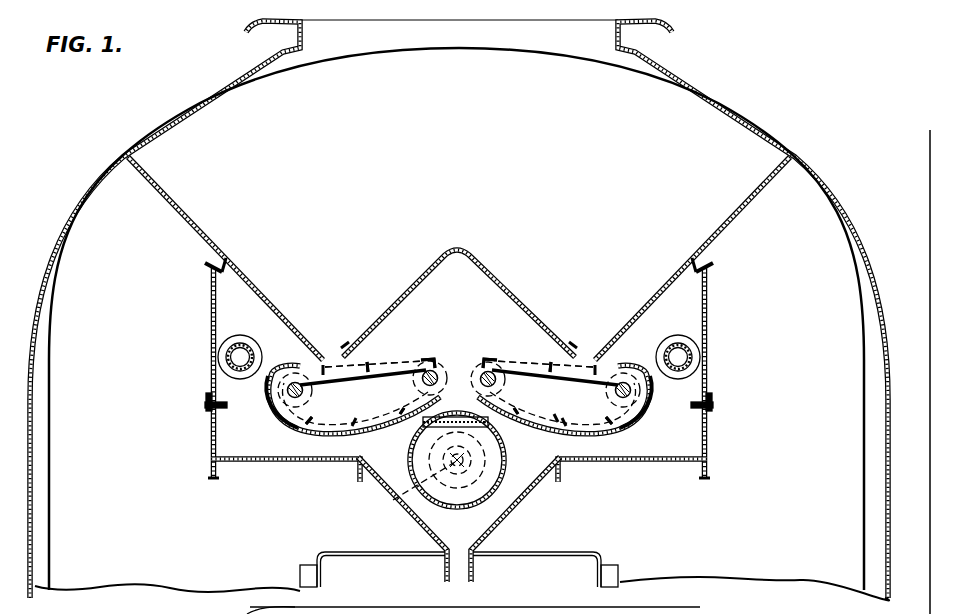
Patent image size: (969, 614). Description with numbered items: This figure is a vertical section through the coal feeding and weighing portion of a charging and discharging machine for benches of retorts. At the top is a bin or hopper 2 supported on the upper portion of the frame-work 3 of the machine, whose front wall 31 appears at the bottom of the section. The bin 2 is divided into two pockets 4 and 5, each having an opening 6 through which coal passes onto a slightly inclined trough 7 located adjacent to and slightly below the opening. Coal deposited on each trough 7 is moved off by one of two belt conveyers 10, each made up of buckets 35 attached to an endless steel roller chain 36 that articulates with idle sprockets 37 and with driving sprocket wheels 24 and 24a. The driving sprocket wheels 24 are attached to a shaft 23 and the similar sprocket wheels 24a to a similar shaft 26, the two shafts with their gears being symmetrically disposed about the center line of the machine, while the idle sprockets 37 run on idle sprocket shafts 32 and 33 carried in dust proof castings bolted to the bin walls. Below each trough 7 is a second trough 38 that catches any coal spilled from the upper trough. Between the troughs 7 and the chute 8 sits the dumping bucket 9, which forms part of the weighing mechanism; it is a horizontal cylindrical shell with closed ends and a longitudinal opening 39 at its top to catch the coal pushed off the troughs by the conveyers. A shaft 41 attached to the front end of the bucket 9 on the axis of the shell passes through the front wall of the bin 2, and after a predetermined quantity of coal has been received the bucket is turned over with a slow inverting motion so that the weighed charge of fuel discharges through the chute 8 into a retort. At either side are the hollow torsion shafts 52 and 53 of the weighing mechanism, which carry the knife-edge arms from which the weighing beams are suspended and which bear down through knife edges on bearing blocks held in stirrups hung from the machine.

The bin or hopper 2 is at (456, 319).
The frame-work 3 is at (158, 110).
The pocket 4 is at (338, 306).
The pocket 5 is at (682, 258).
The opening 6 is at (458, 303).
The trough 7 is at (459, 383).
The chute 8 is at (462, 570).
The dumping bucket or receptacle 9 is at (499, 451).
The belt conveyer 10 is at (396, 362).
The shaft 23 is at (437, 370).
The conveyer driving sprocket wheel 24 is at (434, 362).
The driving sprocket wheel 24a is at (478, 356).
The shaft 26 is at (497, 379).
The front wall 31 is at (188, 566).
The idle sprocket shaft 32 is at (289, 396).
The idle sprocket shaft 33 is at (630, 415).
The bucket 35 is at (382, 354).
The endless steel roller chain 36 is at (398, 421).
The idle sprocket 37 is at (318, 410).
The trough 38 is at (365, 432).
The longitudinal opening 39 is at (455, 412).
The shaft 41 is at (412, 493).
The hollow torsion shaft 52 is at (236, 358).
The hollow torsion shaft 53 is at (686, 357).